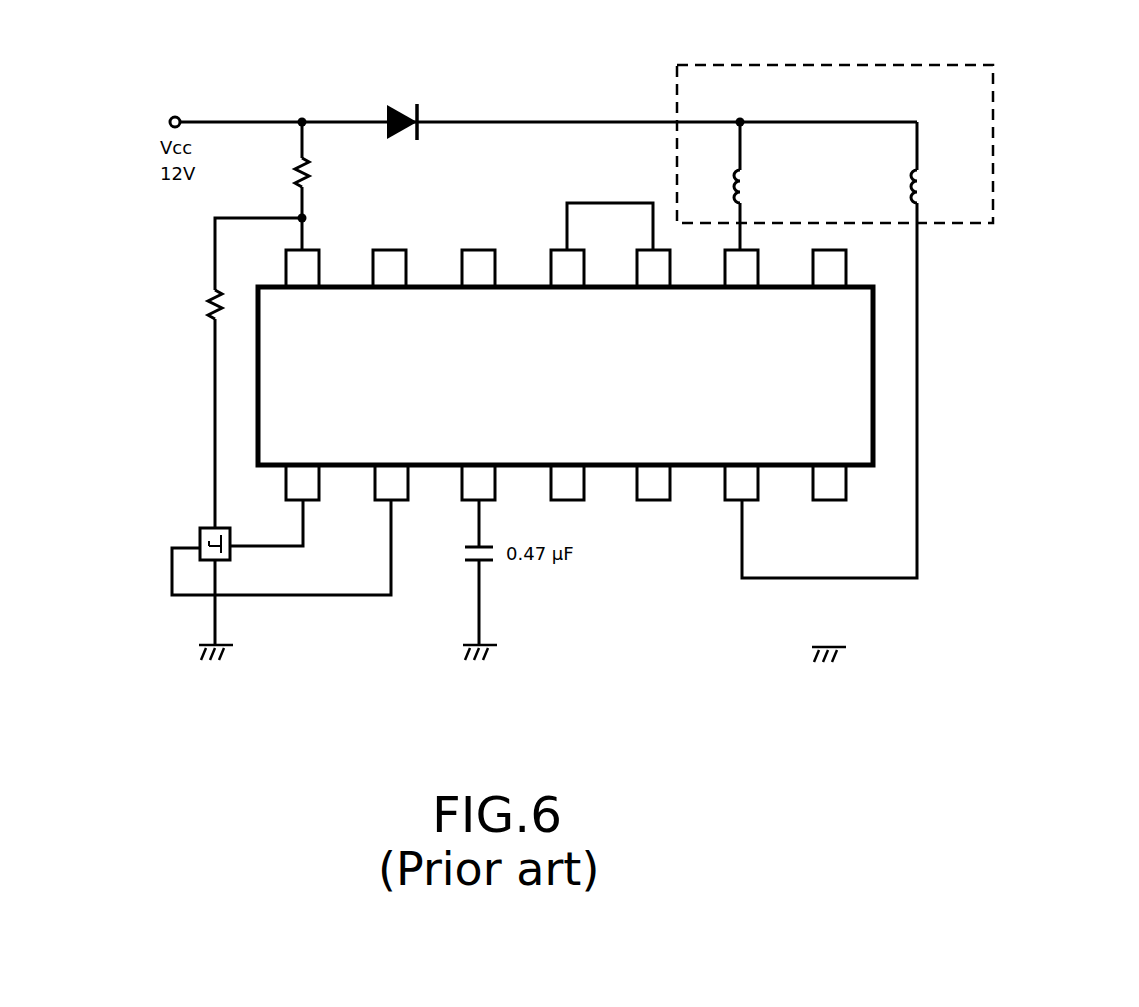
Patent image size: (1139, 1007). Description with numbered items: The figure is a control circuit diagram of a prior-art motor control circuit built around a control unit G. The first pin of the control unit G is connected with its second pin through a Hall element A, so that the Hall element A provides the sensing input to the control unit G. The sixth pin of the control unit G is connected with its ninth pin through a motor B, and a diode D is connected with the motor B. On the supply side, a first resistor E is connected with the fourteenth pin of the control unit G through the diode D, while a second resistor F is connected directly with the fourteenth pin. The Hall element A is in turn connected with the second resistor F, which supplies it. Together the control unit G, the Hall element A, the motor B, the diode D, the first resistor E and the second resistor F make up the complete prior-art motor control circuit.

The Hall element A is at (210, 522).
The motor B is at (1002, 117).
The diode D is at (422, 110).
The first resistor E is at (312, 157).
The second resistor F is at (208, 287).
The control unit G is at (892, 396).